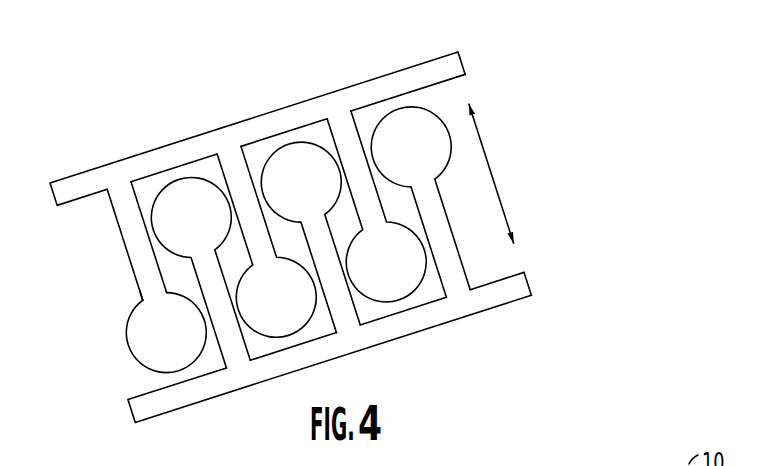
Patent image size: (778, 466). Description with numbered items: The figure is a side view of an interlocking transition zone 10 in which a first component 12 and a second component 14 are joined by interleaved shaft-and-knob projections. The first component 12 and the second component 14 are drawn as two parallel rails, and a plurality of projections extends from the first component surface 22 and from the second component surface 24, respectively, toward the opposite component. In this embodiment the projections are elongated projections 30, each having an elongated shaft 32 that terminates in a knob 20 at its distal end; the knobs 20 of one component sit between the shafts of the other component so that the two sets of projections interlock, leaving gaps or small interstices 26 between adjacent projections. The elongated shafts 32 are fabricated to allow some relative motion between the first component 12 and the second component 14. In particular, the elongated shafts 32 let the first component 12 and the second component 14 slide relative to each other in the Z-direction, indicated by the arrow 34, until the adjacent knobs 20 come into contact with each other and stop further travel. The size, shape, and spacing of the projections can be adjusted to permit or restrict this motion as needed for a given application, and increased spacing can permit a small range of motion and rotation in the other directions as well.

The interlocking transition zone 10 is at (590, 60).
The first component 12 is at (395, 328).
The second component 14 is at (231, 143).
The knob 20 is at (168, 332).
The first component surface 22 is at (510, 273).
The second component surface 24 is at (443, 83).
The interstices 26 is at (320, 133).
The elongated projections 30 is at (126, 313).
The elongated shafts 32 is at (138, 238).
The arrow 34 is at (500, 188).